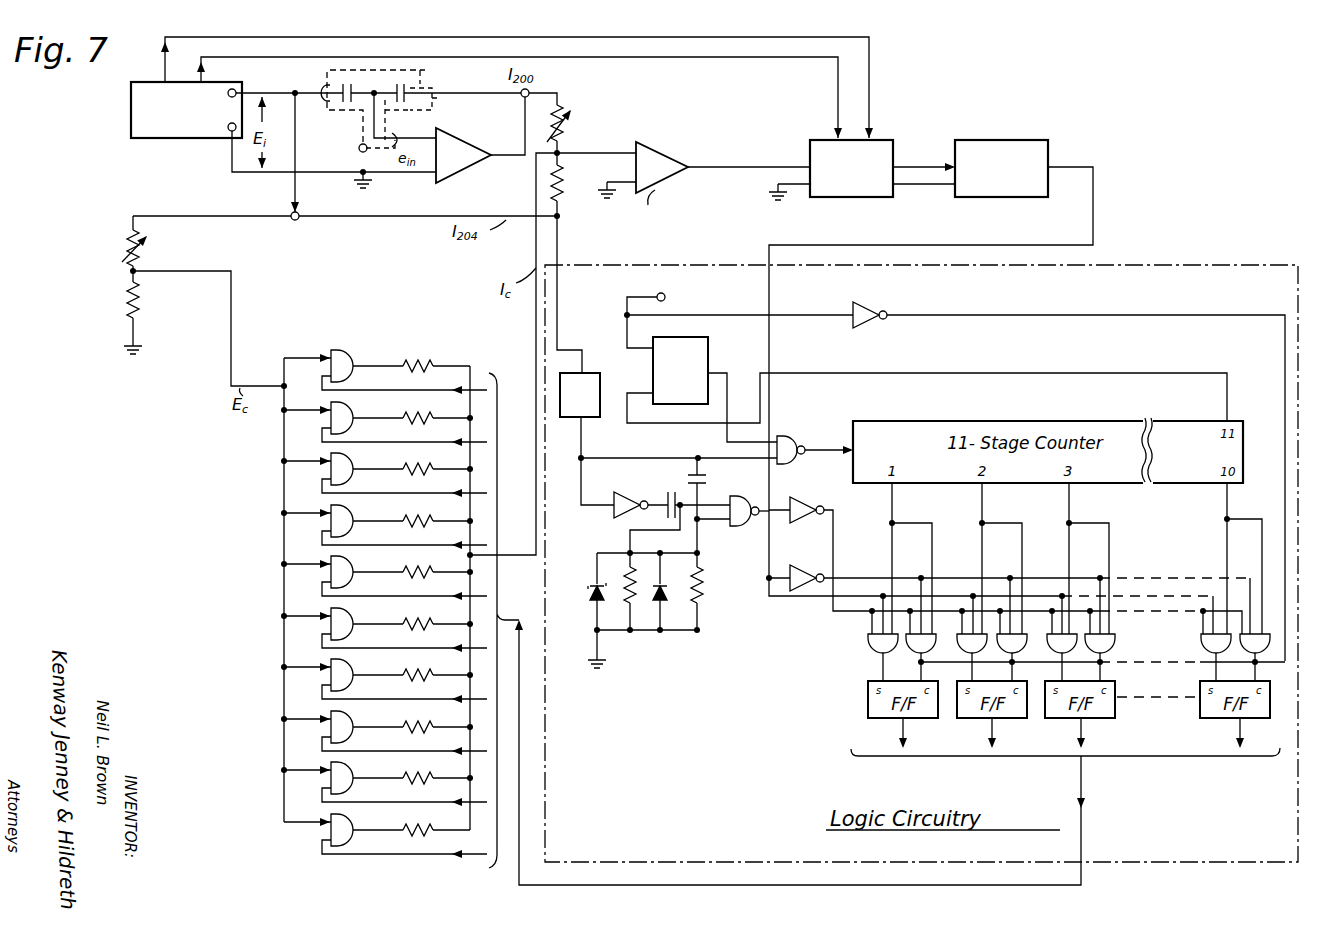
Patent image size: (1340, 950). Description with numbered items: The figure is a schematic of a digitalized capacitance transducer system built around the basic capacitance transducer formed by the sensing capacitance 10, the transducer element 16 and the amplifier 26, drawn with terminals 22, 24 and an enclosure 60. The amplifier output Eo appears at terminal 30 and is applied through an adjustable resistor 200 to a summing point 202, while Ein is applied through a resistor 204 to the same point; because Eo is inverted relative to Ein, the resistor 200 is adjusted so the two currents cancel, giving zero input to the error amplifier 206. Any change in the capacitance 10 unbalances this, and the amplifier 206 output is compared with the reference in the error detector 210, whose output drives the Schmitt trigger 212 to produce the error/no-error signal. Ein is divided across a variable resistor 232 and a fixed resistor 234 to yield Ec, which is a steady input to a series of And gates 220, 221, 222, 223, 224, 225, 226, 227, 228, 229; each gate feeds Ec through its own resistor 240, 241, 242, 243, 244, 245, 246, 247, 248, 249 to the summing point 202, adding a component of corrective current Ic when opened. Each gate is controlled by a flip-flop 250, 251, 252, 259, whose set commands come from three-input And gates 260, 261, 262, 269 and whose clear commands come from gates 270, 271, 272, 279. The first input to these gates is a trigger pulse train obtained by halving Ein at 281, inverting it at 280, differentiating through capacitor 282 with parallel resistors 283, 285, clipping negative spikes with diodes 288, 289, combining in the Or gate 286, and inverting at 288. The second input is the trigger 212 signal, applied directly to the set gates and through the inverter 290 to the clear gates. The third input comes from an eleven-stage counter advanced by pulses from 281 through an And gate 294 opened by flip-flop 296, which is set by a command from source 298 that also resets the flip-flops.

The output terminal 22 is at (236, 90).
The output terminal 24 is at (228, 131).
The capacitance transducer system element 16 is at (325, 86).
The enclosure 60 is at (425, 80).
The sensing capacitance Cs 10 is at (442, 110).
The amplifier 26 is at (462, 170).
The amplifier output terminal 30 is at (521, 97).
The adjustable resistor 200 is at (565, 118).
The summing point 202 is at (561, 151).
The resistor 204 is at (560, 213).
The error amplifier 206 is at (672, 160).
The error detector 210 is at (886, 140).
The Schmitt trigger circuit 212 is at (1041, 140).
The variable resistor 232 is at (125, 245).
The fixed resistor 234 is at (125, 305).
The And gate 220 is at (345, 361).
The And gate 221 is at (345, 413).
The And gate 222 is at (345, 464).
The And gate 223 is at (345, 516).
The And gate 224 is at (345, 567).
The And gate 225 is at (345, 619).
The And gate 226 is at (345, 670).
The And gate 227 is at (345, 722).
The And gate 228 is at (345, 773).
The And gate 229 is at (345, 825).
The resistor 240 is at (412, 370).
The resistor 241 is at (412, 422).
The resistor 242 is at (412, 473).
The resistor 243 is at (412, 525).
The resistor 244 is at (412, 576).
The resistor 245 is at (412, 628).
The resistor 246 is at (412, 679).
The resistor 247 is at (412, 731).
The resistor 248 is at (412, 782).
The resistor 249 is at (412, 834).
The command signal source 298 is at (667, 296).
The flip-flop 296 is at (708, 360).
The frequency halver 281 is at (590, 420).
The And gate 294 is at (781, 436).
The inverter 280 is at (618, 494).
The capacitor 282 is at (705, 476).
The Or gate 286 is at (742, 526).
The diode / pulse inverter-amplifier 288 is at (593, 582).
The resistor 283 is at (636, 612).
The diode 289 is at (665, 600).
The resistor 285 is at (703, 592).
The inverter 290 is at (830, 560).
The three-input And gate 260 is at (876, 650).
The three-input And gate 261 is at (936, 650).
The three-input And gate 262 is at (1026, 650).
The three-input And gate 272 is at (1105, 652).
The three-input And gate 269 is at (1204, 653).
The three-input And gate 279 is at (1272, 651).
The three-input And gate 270 is at (918, 660).
The three-input And gate 271 is at (1008, 660).
The control flip-flop 250 is at (887, 722).
The control flip-flop 251 is at (976, 722).
The control flip-flop 252 is at (1064, 722).
The control flip-flop 259 is at (1222, 722).